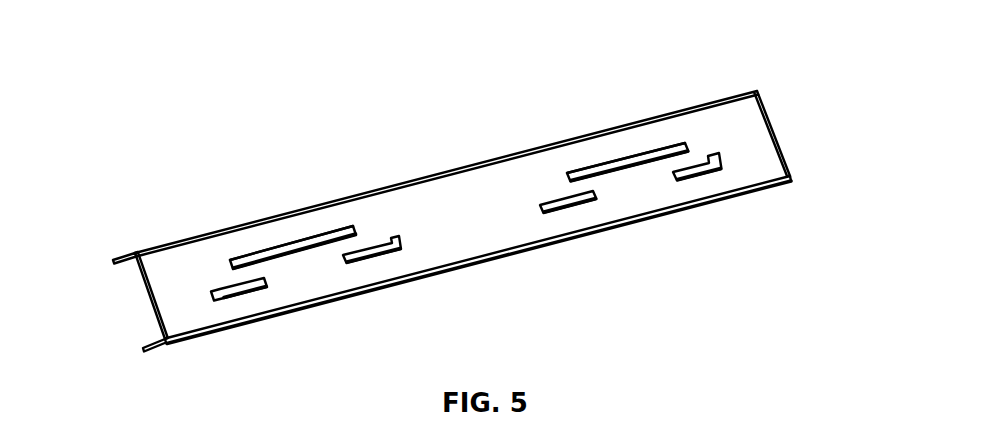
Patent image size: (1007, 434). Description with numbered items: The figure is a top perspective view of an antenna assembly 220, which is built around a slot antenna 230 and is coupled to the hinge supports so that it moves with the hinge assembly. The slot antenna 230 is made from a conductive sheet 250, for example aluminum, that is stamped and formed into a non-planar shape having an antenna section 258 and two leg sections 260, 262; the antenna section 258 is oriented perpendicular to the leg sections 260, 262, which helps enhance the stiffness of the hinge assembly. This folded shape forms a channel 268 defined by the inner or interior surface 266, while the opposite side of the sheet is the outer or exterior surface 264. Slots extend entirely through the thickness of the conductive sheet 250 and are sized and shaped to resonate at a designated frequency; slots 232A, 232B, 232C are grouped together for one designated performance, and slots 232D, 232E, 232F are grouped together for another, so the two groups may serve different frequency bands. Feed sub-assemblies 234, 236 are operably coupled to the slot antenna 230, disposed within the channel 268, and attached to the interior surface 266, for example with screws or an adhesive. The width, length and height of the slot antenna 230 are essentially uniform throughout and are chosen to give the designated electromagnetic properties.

The antenna assembly 220 is at (668, 79).
The slot antenna 230 is at (730, 122).
The slot 232A is at (234, 303).
The slot 232B is at (330, 195).
The slot 232C is at (392, 264).
The slot 232D is at (547, 193).
The slot 232E is at (628, 98).
The slot 232F is at (708, 188).
The feed sub-assembly 234 is at (270, 253).
The feed sub-assembly 236 is at (596, 168).
The conductive sheet 250 is at (757, 152).
The antenna section 258 is at (497, 213).
The leg section 260 is at (116, 257).
The leg section 262 is at (159, 350).
The exterior surface 264 is at (174, 263).
The interior surface 266 is at (124, 285).
The channel 268 is at (116, 322).